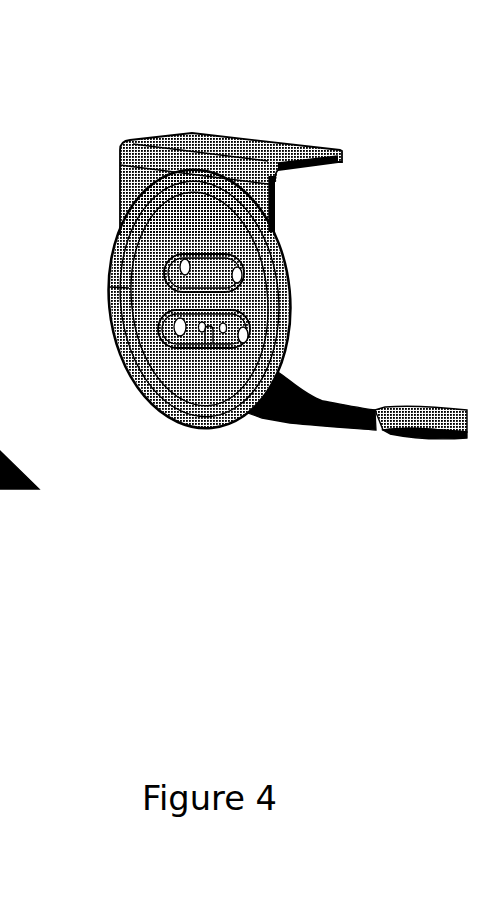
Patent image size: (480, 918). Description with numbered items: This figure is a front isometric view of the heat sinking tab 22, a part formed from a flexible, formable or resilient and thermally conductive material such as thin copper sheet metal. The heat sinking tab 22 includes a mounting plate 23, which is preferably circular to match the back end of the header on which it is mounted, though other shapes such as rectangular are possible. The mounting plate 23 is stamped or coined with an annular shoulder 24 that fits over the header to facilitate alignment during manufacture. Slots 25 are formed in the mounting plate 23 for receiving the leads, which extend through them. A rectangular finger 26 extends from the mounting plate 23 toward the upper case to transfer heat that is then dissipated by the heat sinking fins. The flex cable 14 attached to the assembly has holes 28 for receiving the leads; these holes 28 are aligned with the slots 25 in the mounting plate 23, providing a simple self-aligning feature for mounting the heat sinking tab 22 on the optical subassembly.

The flex cable 14 is at (403, 438).
The heat sinking tab 22 is at (95, 96).
The mounting plate 23 is at (289, 288).
The annular shoulder 24 is at (227, 390).
The slots 25 is at (202, 327).
The rectangular finger 26 is at (217, 140).
The holes 28 is at (163, 316).